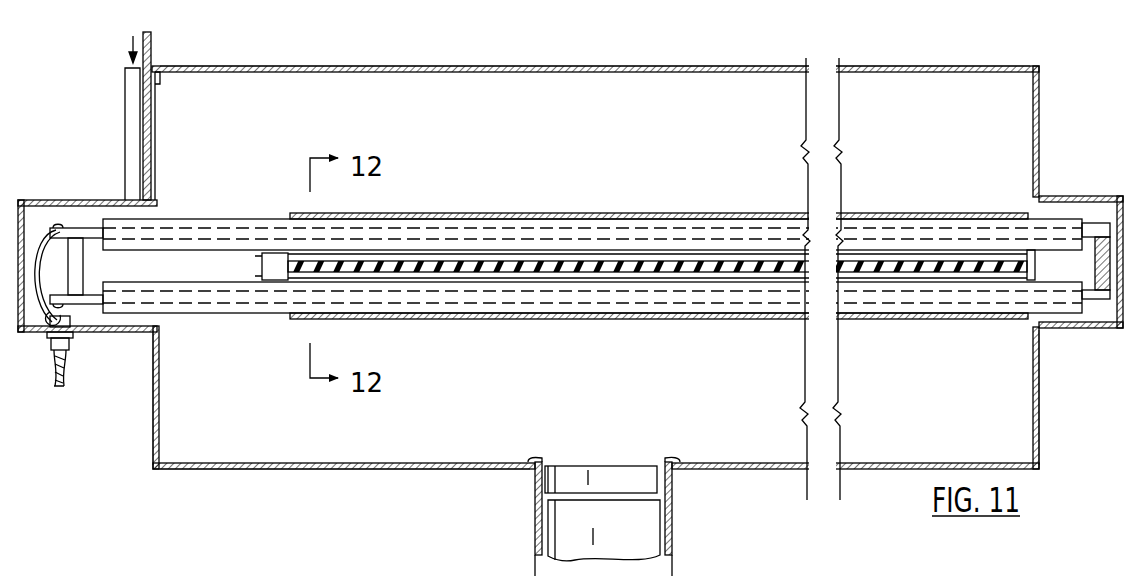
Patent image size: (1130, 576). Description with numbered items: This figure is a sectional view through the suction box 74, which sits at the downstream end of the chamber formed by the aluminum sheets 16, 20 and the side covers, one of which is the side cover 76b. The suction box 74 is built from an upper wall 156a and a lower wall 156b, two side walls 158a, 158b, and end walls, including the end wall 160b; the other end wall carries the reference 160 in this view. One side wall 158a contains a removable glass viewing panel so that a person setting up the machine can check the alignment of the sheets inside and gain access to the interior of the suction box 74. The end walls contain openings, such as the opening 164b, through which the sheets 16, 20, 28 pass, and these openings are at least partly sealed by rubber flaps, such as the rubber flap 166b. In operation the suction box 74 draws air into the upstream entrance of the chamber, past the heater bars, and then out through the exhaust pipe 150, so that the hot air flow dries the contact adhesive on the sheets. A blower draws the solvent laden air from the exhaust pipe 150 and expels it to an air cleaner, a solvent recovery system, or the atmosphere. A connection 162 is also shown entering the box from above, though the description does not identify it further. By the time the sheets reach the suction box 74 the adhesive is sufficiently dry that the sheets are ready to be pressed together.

The suction box 74 is at (592, 56).
The upper wall 156a is at (362, 68).
The lower wall 156b is at (250, 469).
The side wall 158a is at (158, 405).
The side wall 158b is at (1034, 383).
The inlet pipe 162 is at (152, 52).
The end wall 160b is at (40, 575).
The end cap 160 is at (932, 386).
The aluminum sheet 16 is at (470, 214).
The aluminum sheet 20 is at (550, 320).
The opening 164b is at (280, 282).
The sheet 28 is at (527, 261).
The rubber flap 166b is at (261, 265).
The exhaust pipe 150 is at (676, 521).
The side cover 76b is at (889, 568).